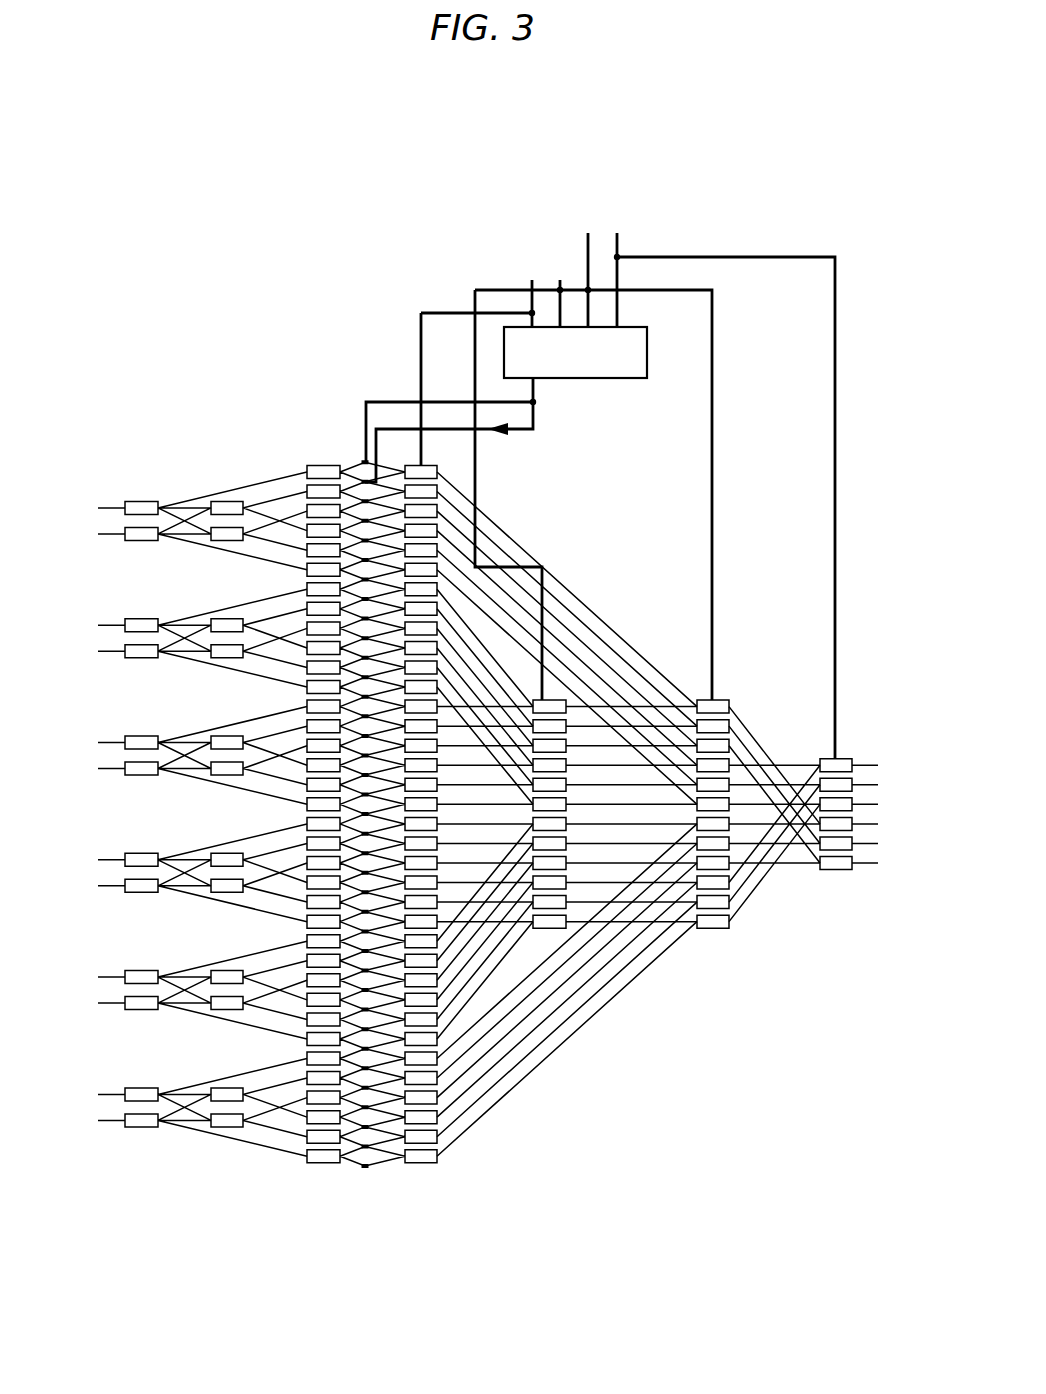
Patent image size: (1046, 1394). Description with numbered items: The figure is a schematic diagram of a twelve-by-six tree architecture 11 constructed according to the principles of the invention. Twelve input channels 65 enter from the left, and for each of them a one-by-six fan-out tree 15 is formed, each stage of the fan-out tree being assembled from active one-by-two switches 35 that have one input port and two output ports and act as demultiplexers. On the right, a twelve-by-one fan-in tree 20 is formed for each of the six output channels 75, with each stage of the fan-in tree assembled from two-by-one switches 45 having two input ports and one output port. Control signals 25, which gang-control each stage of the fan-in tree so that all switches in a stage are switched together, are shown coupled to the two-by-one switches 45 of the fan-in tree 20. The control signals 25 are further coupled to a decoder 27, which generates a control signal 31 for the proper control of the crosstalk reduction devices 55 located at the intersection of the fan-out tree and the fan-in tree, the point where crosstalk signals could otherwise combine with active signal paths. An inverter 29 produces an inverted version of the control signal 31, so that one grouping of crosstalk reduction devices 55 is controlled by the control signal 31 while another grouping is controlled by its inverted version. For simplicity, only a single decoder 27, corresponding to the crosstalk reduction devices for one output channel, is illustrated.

The 12×6 tree architecture 11 is at (661, 169).
The 1×6 fan-out tree 15 is at (340, 462).
The 12×1 fan-in tree 20 is at (832, 897).
The control signals 25 is at (835, 455).
The decoder 27 is at (628, 378).
The inverter 29 is at (497, 433).
The control signal 31 is at (537, 415).
The 1×2 switches 35 is at (233, 1127).
The 2×1 switches 45 is at (548, 928).
The crosstalk reduction devices 55 is at (366, 1167).
The input channels 65 is at (88, 508).
The output channels 75 is at (880, 760).